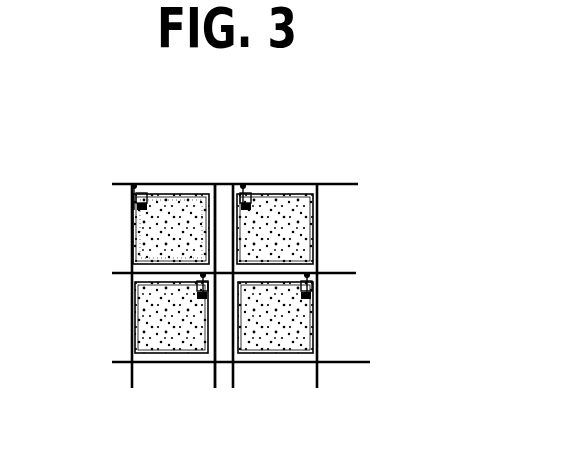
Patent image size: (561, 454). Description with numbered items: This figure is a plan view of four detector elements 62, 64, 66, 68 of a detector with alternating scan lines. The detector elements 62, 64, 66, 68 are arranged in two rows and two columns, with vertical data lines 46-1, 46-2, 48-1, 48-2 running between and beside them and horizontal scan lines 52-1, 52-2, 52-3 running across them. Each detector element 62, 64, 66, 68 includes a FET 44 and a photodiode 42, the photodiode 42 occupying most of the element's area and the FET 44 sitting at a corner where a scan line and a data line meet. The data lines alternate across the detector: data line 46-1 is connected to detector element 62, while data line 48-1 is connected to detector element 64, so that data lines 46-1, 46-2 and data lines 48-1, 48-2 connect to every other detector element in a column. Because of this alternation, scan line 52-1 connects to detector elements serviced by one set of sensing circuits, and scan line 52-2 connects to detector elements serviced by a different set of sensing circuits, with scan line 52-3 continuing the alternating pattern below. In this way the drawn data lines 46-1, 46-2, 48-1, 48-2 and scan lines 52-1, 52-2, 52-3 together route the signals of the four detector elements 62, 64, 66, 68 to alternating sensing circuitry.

The photodiode 42 is at (185, 208).
The FET 44 is at (132, 201).
The data line 46-1 is at (132, 183).
The data line 46-2 is at (234, 183).
The data line 48-1 is at (216, 183).
The data line 48-2 is at (318, 183).
The scan line 52-1 is at (358, 184).
The scan line 52-2 is at (356, 273).
The scan line 52-3 is at (370, 362).
The detector element 62 is at (135, 242).
The detector element 64 is at (140, 318).
The detector element 66 is at (322, 225).
The detector element 68 is at (322, 325).